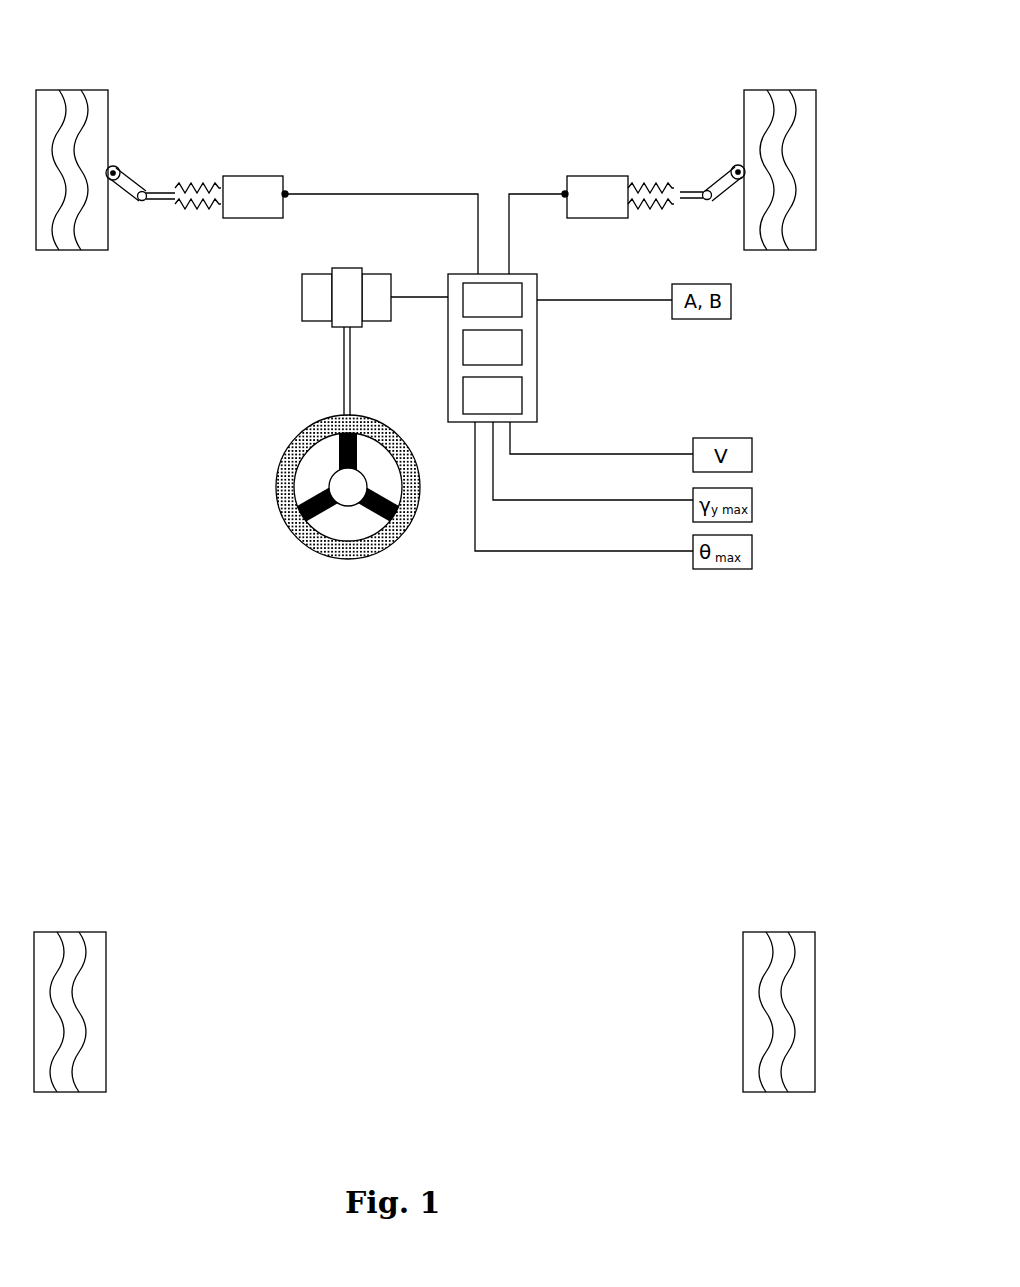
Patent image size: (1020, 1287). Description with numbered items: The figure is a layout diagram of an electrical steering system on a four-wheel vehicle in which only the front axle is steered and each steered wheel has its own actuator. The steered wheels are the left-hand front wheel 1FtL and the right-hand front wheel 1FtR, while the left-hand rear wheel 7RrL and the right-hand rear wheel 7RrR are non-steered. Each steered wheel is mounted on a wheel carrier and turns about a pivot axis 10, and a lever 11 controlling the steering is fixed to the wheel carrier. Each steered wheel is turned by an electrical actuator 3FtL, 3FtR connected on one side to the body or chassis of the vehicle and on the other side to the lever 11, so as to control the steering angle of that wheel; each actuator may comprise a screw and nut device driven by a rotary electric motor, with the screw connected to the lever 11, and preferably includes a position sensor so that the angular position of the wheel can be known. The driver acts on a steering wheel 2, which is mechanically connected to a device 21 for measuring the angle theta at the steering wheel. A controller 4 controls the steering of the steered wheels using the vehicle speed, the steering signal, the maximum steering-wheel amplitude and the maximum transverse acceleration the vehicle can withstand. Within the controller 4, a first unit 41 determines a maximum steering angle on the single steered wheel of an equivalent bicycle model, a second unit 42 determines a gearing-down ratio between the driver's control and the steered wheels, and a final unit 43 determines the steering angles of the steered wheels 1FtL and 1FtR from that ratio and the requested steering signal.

The left-hand front wheel 1FtL is at (105, 40).
The right-hand front wheel 1FtR is at (813, 40).
The electrical actuator 3FtL is at (245, 189).
The electrical actuator 3FtR is at (587, 189).
The pivot axis 10 is at (121, 166).
The lever 11 is at (128, 194).
The device for measuring the angle 21 is at (313, 298).
The steering wheel 2 is at (281, 514).
The controller 4 is at (543, 351).
The first unit 41 is at (525, 396).
The second unit 42 is at (525, 339).
The final unit 43 is at (527, 292).
The left-hand rear wheel 7RrL is at (105, 882).
The right-hand rear wheel 7RrR is at (812, 882).